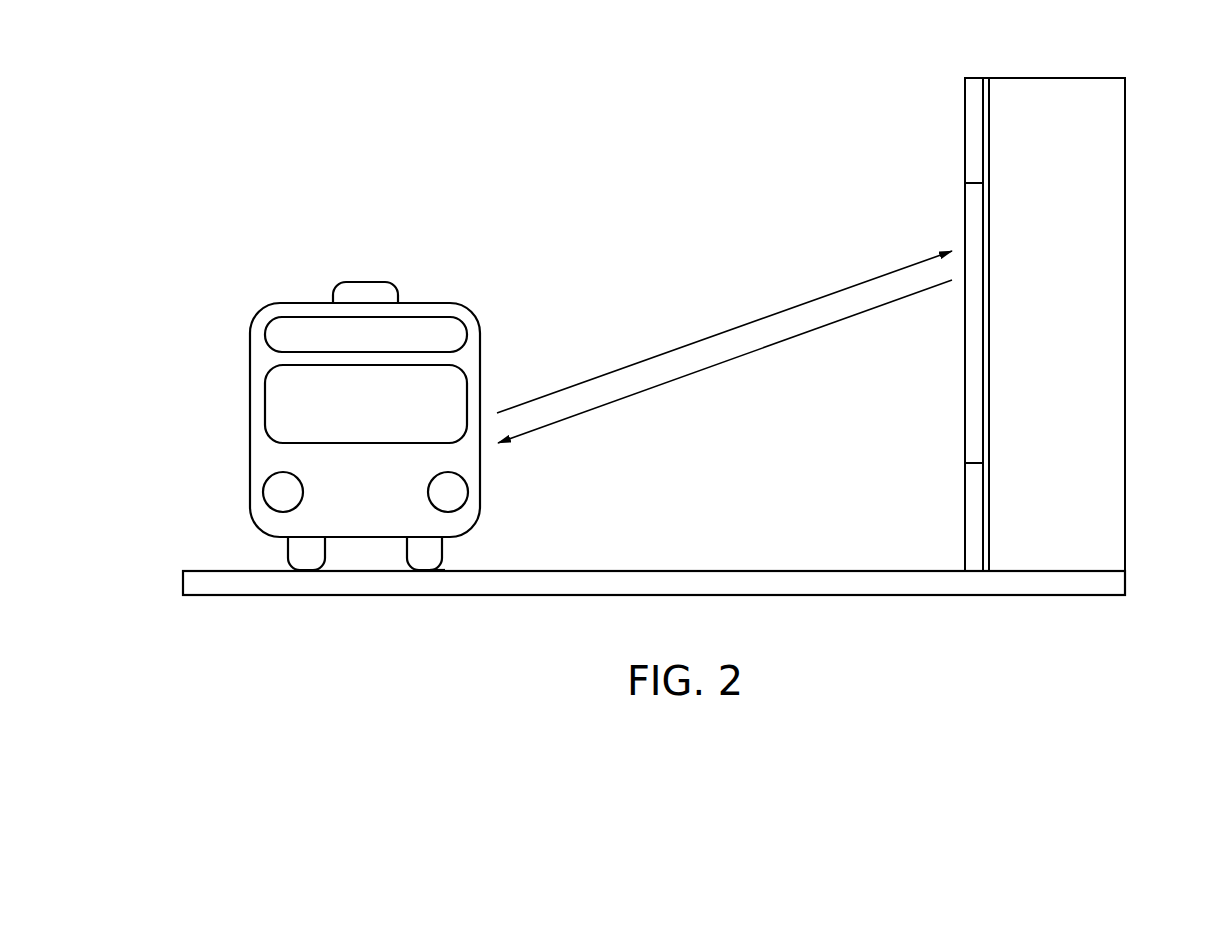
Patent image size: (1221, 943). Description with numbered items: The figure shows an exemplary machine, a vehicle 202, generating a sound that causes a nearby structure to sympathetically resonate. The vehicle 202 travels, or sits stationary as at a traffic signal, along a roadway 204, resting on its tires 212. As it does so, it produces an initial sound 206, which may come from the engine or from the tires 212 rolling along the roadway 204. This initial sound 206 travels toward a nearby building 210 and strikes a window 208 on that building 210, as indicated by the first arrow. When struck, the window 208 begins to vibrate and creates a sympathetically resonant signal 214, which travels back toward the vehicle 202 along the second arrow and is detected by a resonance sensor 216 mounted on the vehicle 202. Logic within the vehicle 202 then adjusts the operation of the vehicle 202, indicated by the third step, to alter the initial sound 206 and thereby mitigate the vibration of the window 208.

The vehicle 202 is at (300, 303).
The roadway 204 is at (208, 571).
The initial sound 206 is at (753, 322).
The window 208 is at (965, 410).
The building 210 is at (1125, 98).
The tires 212 is at (307, 558).
The sympathetically resonant signal 214 is at (740, 357).
The resonance sensor 216 is at (442, 565).